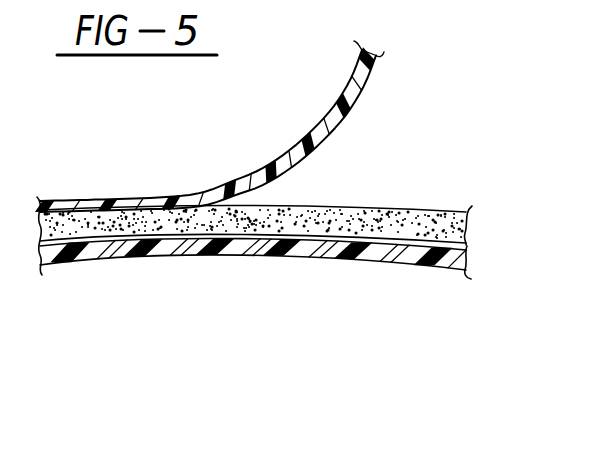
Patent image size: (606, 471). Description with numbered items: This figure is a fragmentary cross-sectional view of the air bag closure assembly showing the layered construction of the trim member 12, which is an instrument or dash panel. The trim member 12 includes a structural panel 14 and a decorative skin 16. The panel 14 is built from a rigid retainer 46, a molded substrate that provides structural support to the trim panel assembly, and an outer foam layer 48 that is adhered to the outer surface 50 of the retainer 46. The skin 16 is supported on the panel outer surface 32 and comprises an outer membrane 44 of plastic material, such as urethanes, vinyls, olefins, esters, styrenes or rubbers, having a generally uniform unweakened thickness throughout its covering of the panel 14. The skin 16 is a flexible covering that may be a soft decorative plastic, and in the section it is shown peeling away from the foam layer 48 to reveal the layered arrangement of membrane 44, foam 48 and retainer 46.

The trim member 12 is at (253, 300).
The structural panel 14 is at (292, 172).
The decorative skin 16 is at (209, 118).
The panel outer surface 32 is at (338, 204).
The outer membrane 44 is at (230, 184).
The retainer 46 is at (300, 246).
The outer foam layer 48 is at (413, 232).
The outer surface of the retainer 50 is at (468, 241).